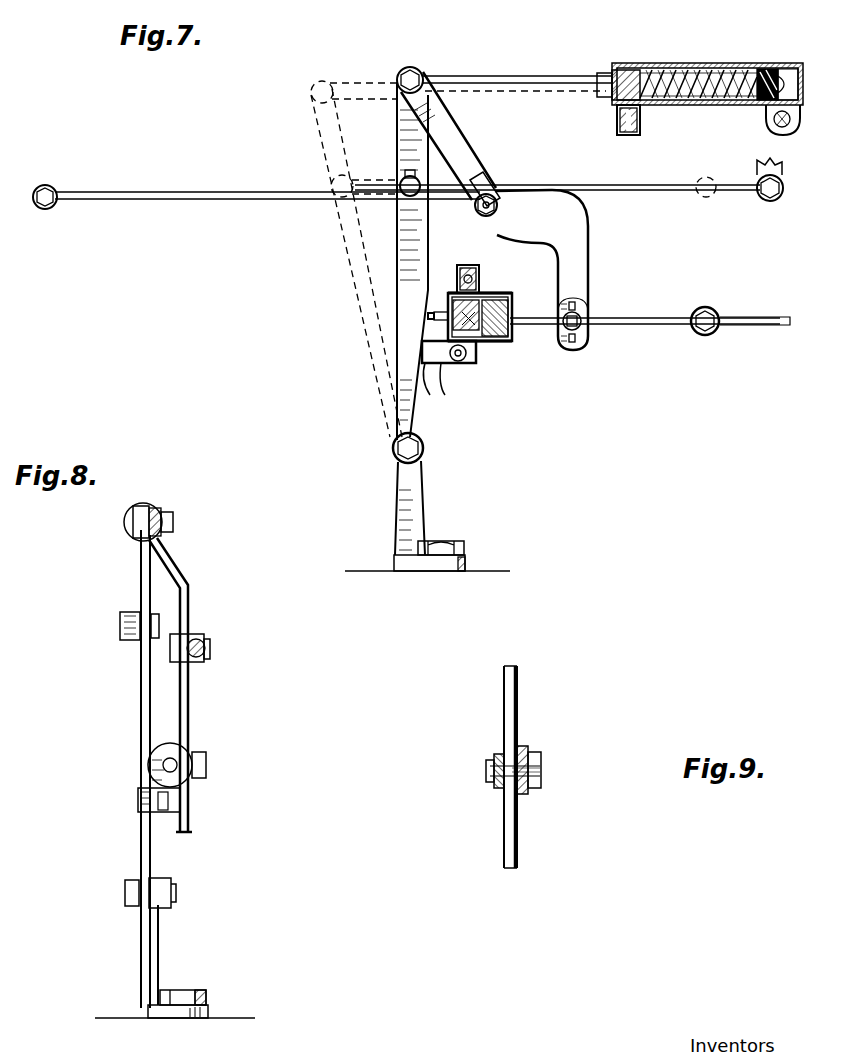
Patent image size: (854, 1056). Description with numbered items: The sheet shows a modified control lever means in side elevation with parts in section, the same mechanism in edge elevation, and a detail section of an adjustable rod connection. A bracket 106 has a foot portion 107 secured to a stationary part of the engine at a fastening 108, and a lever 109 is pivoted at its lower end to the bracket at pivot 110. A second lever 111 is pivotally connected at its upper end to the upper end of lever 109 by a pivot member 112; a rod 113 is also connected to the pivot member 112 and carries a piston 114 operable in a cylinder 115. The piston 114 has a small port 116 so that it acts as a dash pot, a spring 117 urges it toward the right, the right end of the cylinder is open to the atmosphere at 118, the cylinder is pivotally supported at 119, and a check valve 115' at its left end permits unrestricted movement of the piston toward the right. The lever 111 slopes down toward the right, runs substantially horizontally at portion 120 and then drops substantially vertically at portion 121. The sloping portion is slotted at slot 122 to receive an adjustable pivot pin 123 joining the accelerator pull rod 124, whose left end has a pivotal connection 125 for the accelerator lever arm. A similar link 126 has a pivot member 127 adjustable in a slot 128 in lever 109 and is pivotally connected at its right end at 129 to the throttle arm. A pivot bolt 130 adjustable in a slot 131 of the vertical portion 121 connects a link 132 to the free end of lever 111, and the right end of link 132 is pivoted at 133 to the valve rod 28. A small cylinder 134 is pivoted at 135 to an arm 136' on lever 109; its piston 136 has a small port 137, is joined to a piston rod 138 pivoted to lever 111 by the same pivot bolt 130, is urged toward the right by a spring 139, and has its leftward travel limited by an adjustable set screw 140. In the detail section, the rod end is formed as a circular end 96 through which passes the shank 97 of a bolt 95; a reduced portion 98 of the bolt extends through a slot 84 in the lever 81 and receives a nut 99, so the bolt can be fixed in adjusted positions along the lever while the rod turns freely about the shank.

In FIG. 7, the valve rod 28 is at (755, 316).
In FIG. 9, the lever 81 is at (518, 690).
In FIG. 9, the slot 84 is at (510, 806).
In FIG. 9, the bolt 95 is at (540, 760).
In FIG. 9, the circular end 96 is at (525, 745).
In FIG. 9, the shank 97 is at (541, 768).
In FIG. 9, the reduced portion 98 is at (490, 778).
In FIG. 9, the nut 99 is at (494, 754).
In FIG. 7, the bracket 106 is at (400, 487).
In FIG. 8, the bracket 106 is at (150, 950).
In FIG. 7, the foot portion 107 is at (468, 562).
In FIG. 8, the foot portion 107 is at (205, 1005).
In FIG. 7, the fastening 108 is at (458, 541).
In FIG. 8, the fastening 108 is at (200, 988).
In FIG. 7, the lever 109 is at (420, 262).
In FIG. 8, the lever 109 is at (138, 720).
In FIG. 7, the pivot 110 is at (393, 447).
In FIG. 8, the pivot 110 is at (125, 892).
In FIG. 7, the second lever 111 is at (470, 150).
In FIG. 8, the second lever 111 is at (186, 576).
In FIG. 7, the pivot member 112 is at (418, 70).
In FIG. 8, the pivot member 112 is at (128, 526).
In FIG. 7, the rod 113 is at (525, 74).
In FIG. 7, the piston 114 is at (765, 107).
In FIG. 7, the cylinder 115 is at (700, 72).
In FIG. 8, the cylinder 115 is at (166, 510).
In FIG. 7, the check valve 115' is at (609, 120).
In FIG. 7, the port 116 is at (768, 68).
In FIG. 7, the spring 117 is at (716, 70).
In FIG. 7, the atmospheric opening 118 is at (800, 85).
In FIG. 7, the pivotal support 119 is at (781, 128).
In FIG. 7, the horizontal portion 120 is at (530, 240).
In FIG. 7, the vertical portion 121 is at (589, 272).
In FIG. 8, the vertical portion 121 is at (186, 795).
In FIG. 7, the slot 122 is at (490, 176).
In FIG. 7, the adjustable pivot pin 123 is at (480, 215).
In FIG. 8, the adjustable pivot pin 123 is at (210, 660).
In FIG. 7, the accelerator pull rod 124 is at (265, 191).
In FIG. 8, the accelerator pull rod 124 is at (205, 645).
In FIG. 7, the pivotal connection 125 is at (50, 188).
In FIG. 7, the link 126 is at (635, 183).
In FIG. 8, the link 126 is at (120, 626).
In FIG. 7, the pivot member 127 is at (402, 180).
In FIG. 7, the slot 128 is at (408, 170).
In FIG. 7, the pivotal connection 129 is at (770, 201).
In FIG. 7, the pivot bolt 130 is at (600, 300).
In FIG. 7, the slot 131 is at (571, 350).
In FIG. 7, the link 132 is at (650, 326).
In FIG. 8, the link 132 is at (200, 757).
In FIG. 7, the pivotal connection 133 is at (704, 308).
In FIG. 7, the small cylinder 134 is at (512, 305).
In FIG. 7, the pivotal connection 135 is at (460, 363).
In FIG. 8, the pivotal connection 135 is at (158, 812).
In FIG. 7, the piston 136 is at (469, 356).
In FIG. 7, the arm 136' is at (440, 392).
In FIG. 7, the small port 137 is at (485, 305).
In FIG. 7, the piston rod 138 is at (535, 322).
In FIG. 7, the spring 139 is at (462, 360).
In FIG. 7, the adjustable set screw 140 is at (470, 268).